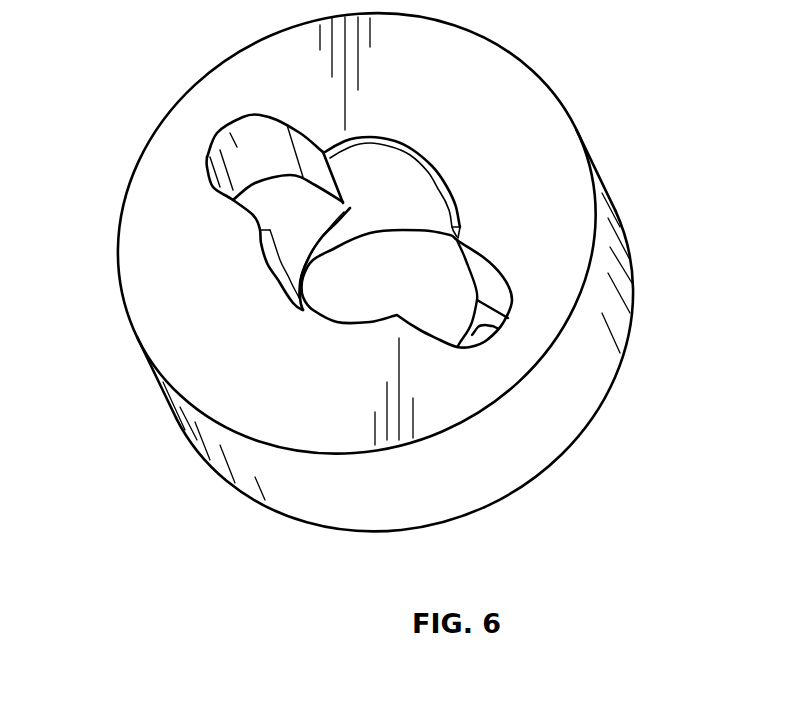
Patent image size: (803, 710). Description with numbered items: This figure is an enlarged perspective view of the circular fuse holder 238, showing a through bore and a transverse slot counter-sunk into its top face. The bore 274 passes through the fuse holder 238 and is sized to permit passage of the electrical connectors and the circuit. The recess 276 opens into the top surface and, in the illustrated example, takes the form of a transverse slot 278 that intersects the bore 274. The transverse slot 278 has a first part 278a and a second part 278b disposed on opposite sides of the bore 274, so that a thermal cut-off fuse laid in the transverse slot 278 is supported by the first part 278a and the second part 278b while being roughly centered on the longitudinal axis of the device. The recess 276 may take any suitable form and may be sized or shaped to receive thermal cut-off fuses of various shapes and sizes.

The fuse holder 238 is at (572, 173).
The bore 274 is at (383, 295).
The recess 276 is at (280, 215).
The transverse slot 278 is at (487, 263).
The first part of the transverse slot 278a is at (470, 343).
The second part of the transverse slot 278b is at (243, 140).